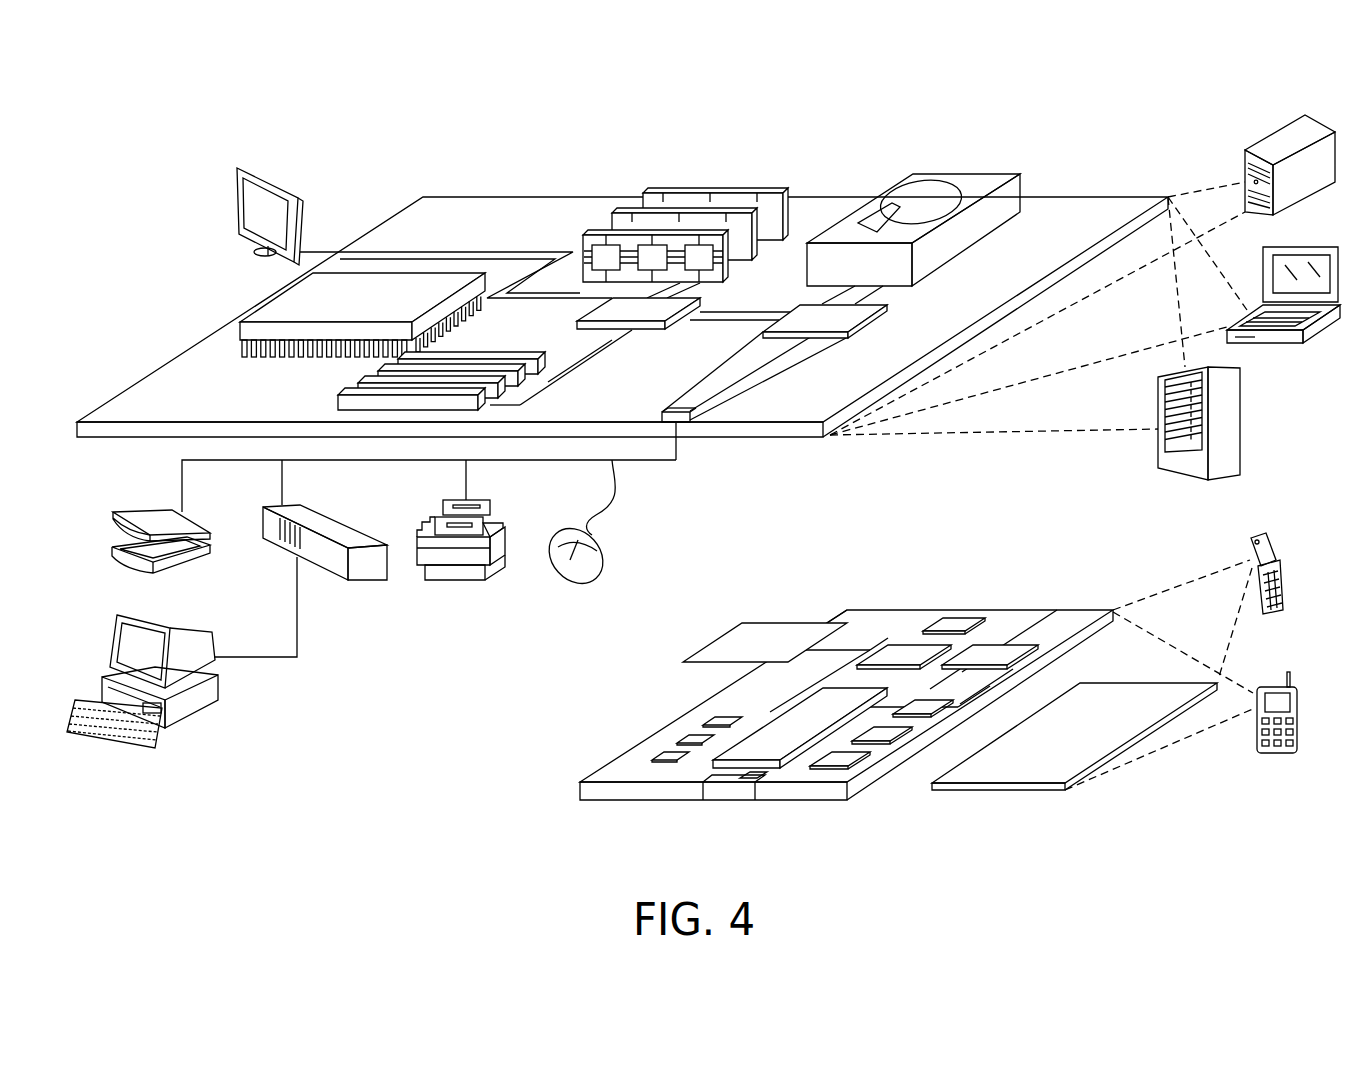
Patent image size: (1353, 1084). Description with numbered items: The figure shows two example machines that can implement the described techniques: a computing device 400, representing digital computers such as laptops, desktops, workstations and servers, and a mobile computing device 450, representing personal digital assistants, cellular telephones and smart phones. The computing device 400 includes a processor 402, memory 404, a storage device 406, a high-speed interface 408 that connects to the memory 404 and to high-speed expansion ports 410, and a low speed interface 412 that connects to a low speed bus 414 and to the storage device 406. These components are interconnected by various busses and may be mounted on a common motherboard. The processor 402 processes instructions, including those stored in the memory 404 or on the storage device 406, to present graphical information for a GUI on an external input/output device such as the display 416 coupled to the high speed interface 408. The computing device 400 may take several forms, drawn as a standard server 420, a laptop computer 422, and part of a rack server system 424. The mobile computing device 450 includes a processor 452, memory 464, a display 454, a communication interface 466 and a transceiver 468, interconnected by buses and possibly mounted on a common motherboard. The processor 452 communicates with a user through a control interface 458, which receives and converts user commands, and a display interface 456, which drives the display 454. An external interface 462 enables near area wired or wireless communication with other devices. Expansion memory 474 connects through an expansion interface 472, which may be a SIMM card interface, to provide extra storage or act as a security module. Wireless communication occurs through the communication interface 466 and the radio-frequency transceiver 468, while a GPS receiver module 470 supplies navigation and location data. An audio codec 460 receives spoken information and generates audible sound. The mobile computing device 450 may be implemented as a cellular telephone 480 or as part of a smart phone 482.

The computing device 400 is at (372, 146).
The processor 402 is at (266, 307).
The memory 404 is at (720, 192).
The storage device 406 is at (955, 173).
The high-speed interface 408 is at (652, 307).
The high-speed expansion ports 410 is at (365, 385).
The low speed interface 412 is at (797, 313).
The low speed bus 414 is at (683, 407).
The display 416 is at (243, 168).
The standard server 420 is at (1265, 143).
The laptop computer 422 is at (1318, 247).
The rack server system 424 is at (1240, 422).
The computing device 450 is at (534, 808).
The processor 452 is at (768, 730).
The display 454 is at (1113, 700).
The display interface 456 is at (853, 757).
The control interface 458 is at (887, 732).
The audio codec 460 is at (927, 700).
The external interface 462 is at (730, 787).
The memory 464 is at (682, 738).
The communication interface 466 is at (903, 643).
The transceiver 468 is at (997, 640).
The GPS receiver module 470 is at (955, 620).
The expansion interface 472 is at (827, 622).
The expansion memory 474 is at (742, 622).
The cellular telephone 480 is at (1262, 533).
The smart phone 482 is at (1273, 687).